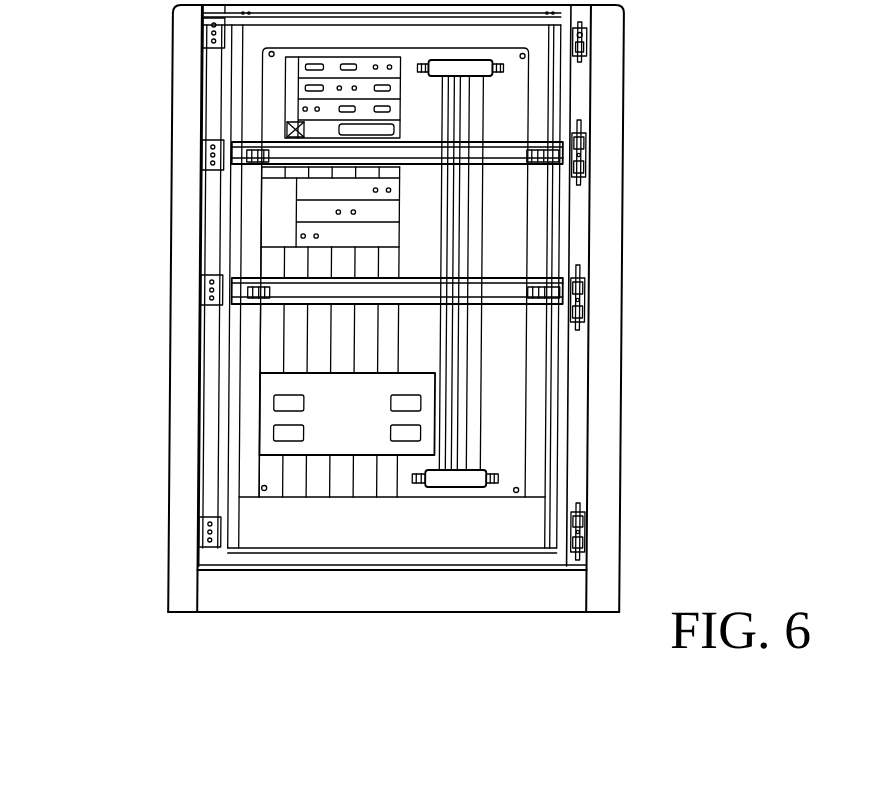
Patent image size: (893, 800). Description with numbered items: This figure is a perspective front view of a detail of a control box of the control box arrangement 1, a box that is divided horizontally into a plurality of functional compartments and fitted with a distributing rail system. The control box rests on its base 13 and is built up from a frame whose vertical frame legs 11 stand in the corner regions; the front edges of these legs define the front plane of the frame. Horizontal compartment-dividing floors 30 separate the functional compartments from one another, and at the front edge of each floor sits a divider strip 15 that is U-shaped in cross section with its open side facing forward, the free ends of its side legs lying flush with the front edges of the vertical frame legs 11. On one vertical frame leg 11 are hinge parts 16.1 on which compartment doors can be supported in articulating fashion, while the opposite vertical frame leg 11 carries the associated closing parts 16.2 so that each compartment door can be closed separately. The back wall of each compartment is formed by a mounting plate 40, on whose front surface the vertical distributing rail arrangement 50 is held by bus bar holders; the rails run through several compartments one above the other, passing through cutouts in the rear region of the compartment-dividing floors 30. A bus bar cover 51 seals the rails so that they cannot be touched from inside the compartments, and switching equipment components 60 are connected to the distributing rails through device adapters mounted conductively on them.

The control box arrangement 1 is at (477, 618).
The vertical frame leg 11 is at (205, 257).
The base 13 is at (280, 600).
The divider strip 15 is at (292, 153).
The hinge part 16.1 is at (590, 289).
The closing part 16.2 is at (204, 162).
The compartment-dividing floor 30 is at (367, 562).
The mounting plate 40 is at (272, 97).
The distributing rail arrangement 50 is at (476, 392).
The bus bar cover 51 is at (316, 350).
The switching equipment component 60 is at (266, 433).